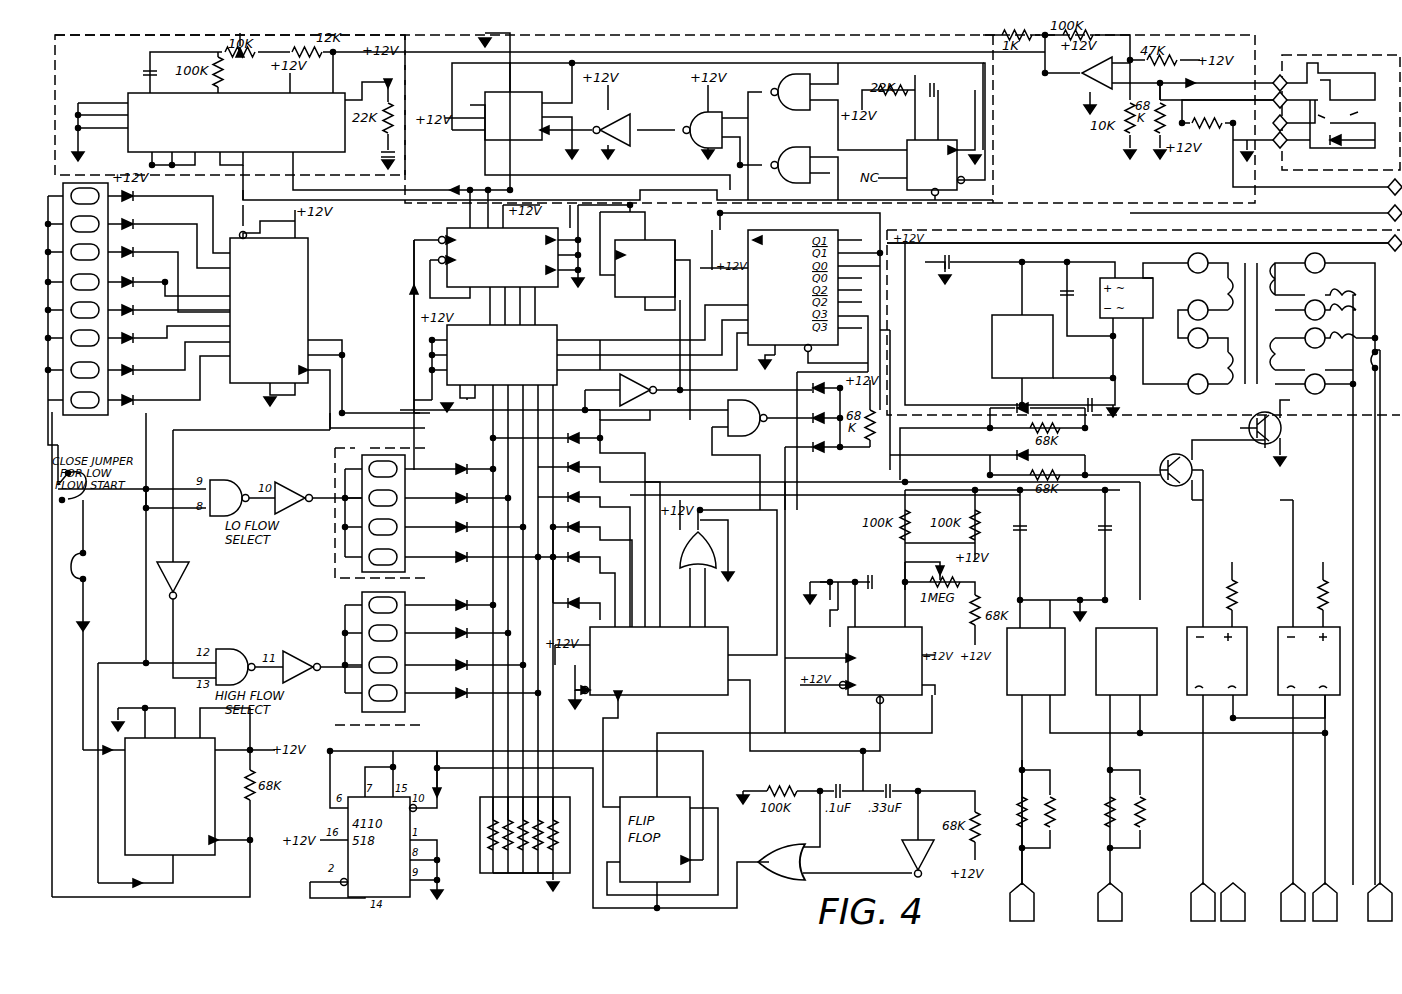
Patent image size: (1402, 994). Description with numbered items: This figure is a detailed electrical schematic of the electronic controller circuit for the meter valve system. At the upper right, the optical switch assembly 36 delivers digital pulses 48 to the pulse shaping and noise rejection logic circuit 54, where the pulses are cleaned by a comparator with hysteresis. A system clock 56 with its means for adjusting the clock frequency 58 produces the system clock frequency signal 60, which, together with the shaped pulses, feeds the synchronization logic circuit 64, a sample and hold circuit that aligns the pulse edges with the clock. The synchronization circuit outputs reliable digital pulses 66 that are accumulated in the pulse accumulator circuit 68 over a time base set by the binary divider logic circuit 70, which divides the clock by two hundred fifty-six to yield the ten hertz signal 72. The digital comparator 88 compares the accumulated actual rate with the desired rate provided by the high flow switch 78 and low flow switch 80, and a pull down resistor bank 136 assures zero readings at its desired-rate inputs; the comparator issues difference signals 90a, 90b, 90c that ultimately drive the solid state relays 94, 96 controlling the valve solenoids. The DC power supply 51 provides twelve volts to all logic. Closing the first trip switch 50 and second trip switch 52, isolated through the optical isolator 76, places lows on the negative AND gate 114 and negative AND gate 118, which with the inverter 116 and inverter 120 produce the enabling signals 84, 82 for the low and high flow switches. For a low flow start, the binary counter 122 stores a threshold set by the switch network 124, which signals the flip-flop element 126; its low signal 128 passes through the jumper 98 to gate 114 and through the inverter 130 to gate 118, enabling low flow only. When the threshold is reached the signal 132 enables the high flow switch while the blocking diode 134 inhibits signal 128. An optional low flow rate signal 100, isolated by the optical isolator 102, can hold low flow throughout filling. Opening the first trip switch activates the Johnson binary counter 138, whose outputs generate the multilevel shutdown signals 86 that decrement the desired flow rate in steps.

The optical switch assembly 36 is at (1327, 102).
The digital pulses 48 is at (1200, 78).
The first trip switch 50 is at (1118, 888).
The DC power supply 51 is at (1271, 323).
The second trip switch 52 is at (73, 299).
The pulse shaping and noise rejection logic circuit 54 is at (1125, 200).
The system clock 56 is at (88, 36).
The means for adjusting the clock frequency 58 is at (1240, 888).
The system clock frequency signal 60 is at (675, 43).
The synchronization logic circuit 64 is at (993, 190).
The digital pulses 66 is at (404, 266).
The pulse accumulator circuit 68 is at (502, 257).
The binary divider logic circuit 70 is at (236, 122).
The 10-Hz signal 72 is at (471, 191).
The optical isolator 76 is at (1145, 628).
The high flow switch 78 is at (452, 718).
The low flow switch 80 is at (445, 453).
The enabling signal 82 is at (336, 658).
The enabling signal 84 is at (336, 488).
The multilevel shutdown signals 86 is at (563, 440).
The digital comparator 88 is at (502, 355).
The comparator output signal 90a is at (652, 322).
The comparator output signal 90b is at (652, 337).
The comparator output signal 90c is at (652, 351).
The solid state relay 94 is at (1332, 627).
The solid state relay 96 is at (1240, 627).
The jumper 98 is at (100, 537).
The low flow rate signal 100 is at (1030, 888).
The optical isolator 102 is at (1052, 695).
The negative AND gate 114 is at (254, 481).
The inverter 116 is at (305, 481).
The negative AND gate 118 is at (254, 651).
The inverter 120 is at (307, 651).
The binary counter 122 is at (269, 310).
The switch network 124 is at (82, 418).
The flip-flop element 126 is at (170, 796).
The low signal 128 is at (100, 757).
The inverter 130 is at (183, 575).
The signal 132 is at (132, 883).
The blocking diode 134 is at (92, 620).
The pull down resistor bank 136 is at (548, 790).
The binary counter 138 is at (659, 661).